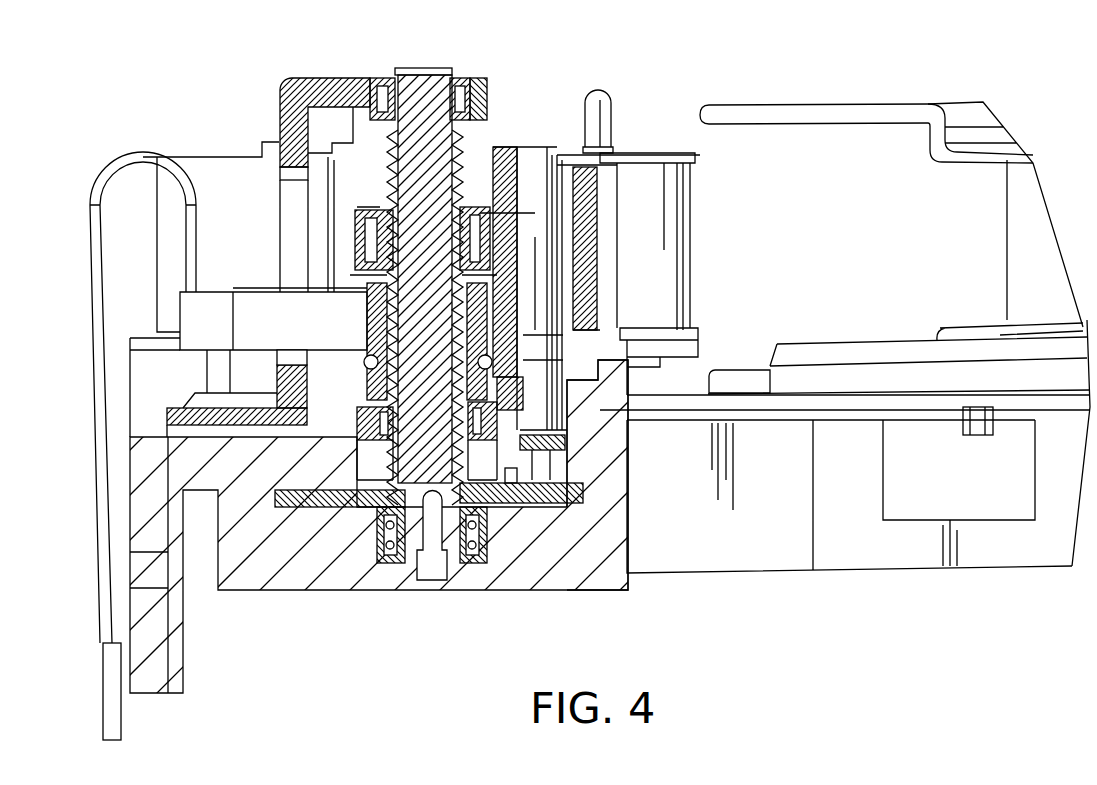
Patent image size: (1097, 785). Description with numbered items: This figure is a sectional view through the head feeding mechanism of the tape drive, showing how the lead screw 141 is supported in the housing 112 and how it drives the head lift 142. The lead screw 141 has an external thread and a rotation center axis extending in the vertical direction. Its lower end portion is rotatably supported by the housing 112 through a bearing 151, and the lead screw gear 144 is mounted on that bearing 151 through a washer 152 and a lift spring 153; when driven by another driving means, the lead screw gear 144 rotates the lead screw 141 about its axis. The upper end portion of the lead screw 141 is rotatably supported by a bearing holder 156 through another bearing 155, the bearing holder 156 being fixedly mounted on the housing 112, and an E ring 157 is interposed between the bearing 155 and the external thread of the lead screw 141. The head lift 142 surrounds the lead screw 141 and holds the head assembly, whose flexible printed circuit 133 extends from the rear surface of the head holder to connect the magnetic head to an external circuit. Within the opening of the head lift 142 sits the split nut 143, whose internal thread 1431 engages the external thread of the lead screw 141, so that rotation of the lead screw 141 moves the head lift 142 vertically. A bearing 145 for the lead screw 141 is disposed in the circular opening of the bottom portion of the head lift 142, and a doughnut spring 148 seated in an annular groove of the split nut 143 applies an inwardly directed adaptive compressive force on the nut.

The housing 112 is at (230, 545).
The flexible printed circuit 133 is at (112, 157).
The lead screw 141 is at (412, 90).
The head lift 142 is at (357, 207).
The split nut 143 is at (500, 147).
The internal thread 1431 is at (365, 507).
The lead screw gear 144 is at (600, 575).
The bearing 145 is at (507, 510).
The doughnut spring 148 is at (303, 530).
The bearing 151 is at (405, 588).
The washer 152 is at (470, 560).
The lift spring 153 is at (372, 513).
The bearing 155 is at (478, 78).
The bearing holder 156 is at (298, 78).
The E ring 157 is at (455, 95).